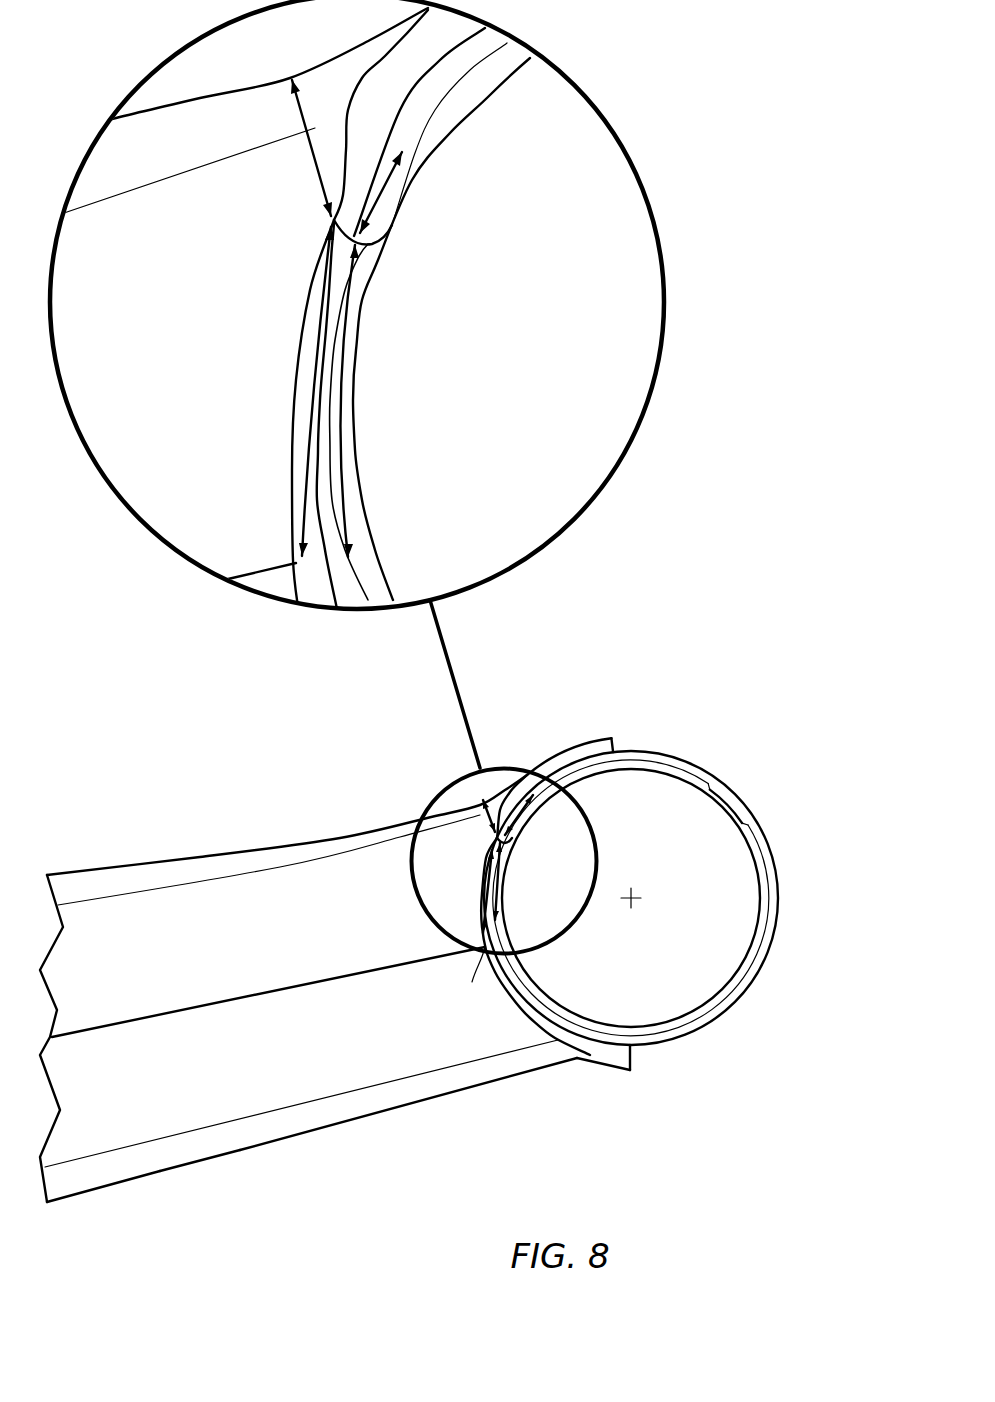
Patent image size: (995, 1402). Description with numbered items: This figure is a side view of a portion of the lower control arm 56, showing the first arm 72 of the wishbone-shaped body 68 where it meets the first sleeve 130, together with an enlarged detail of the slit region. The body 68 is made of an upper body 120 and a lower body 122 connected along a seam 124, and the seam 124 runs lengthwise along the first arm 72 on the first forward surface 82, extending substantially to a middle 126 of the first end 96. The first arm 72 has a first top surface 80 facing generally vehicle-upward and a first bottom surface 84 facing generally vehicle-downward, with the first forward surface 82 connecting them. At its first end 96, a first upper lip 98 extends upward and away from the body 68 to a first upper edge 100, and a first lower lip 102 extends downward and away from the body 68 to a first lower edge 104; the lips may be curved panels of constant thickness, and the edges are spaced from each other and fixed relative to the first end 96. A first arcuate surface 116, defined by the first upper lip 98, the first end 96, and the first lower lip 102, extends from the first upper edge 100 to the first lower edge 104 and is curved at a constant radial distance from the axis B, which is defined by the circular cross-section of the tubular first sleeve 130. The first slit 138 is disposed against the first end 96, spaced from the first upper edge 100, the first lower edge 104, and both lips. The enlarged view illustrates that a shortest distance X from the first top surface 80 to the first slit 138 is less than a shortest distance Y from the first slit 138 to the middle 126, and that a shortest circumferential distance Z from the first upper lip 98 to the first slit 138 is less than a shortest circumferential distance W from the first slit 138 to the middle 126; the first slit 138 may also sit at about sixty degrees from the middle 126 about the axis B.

The lower control arm 56 is at (240, 819).
The body 68 is at (73, 1202).
The first arm 72 is at (202, 1163).
The first top surface 80 is at (340, 835).
The first forward surface 82 is at (380, 1097).
The first bottom surface 84 is at (282, 1140).
The first end 96 is at (517, 993).
The first upper lip 98 is at (573, 748).
The first upper edge 100 is at (614, 738).
The first lower lip 102 is at (608, 1070).
The first lower edge 104 is at (630, 1060).
The first arcuate surface 116 is at (520, 970).
The upper body 120 is at (112, 868).
The lower body 122 is at (143, 1178).
The seam 124 is at (167, 1013).
The middle of the first end 126 is at (484, 950).
The first sleeve 130 is at (710, 1022).
The first slit 138 is at (372, 250).
The shortest distance from first top surface to first slit X is at (312, 130).
The shortest distance from first slit to middle of first end Y is at (321, 331).
The shortest circumferential distance from first upper lip to first slit Z is at (380, 192).
The shortest circumferential distance from first slit to middle of first end W is at (330, 360).
The axis B is at (636, 902).